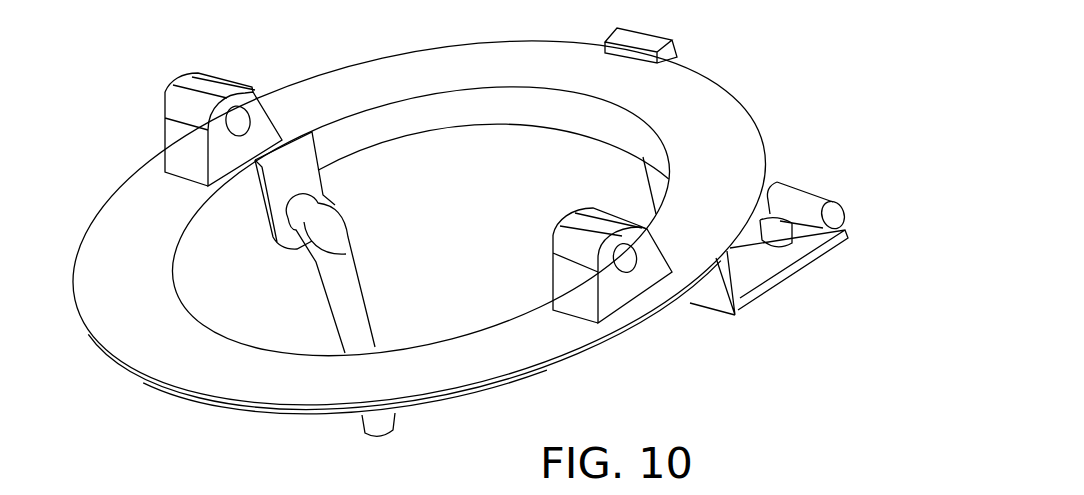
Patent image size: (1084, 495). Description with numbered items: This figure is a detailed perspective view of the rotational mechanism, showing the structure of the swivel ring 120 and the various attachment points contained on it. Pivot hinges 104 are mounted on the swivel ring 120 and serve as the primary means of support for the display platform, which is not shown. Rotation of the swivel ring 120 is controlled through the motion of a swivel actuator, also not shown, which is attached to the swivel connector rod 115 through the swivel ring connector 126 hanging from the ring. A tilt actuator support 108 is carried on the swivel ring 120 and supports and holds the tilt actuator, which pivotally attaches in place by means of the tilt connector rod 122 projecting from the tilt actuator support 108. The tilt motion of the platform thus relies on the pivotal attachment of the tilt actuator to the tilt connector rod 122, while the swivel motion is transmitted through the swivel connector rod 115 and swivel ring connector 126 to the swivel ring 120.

The pivot hinges 104 is at (625, 290).
The tilt actuator support 108 is at (763, 287).
The swivel connector rod 115 is at (353, 283).
The swivel ring 120 is at (720, 132).
The tilt connector rod 122 is at (803, 193).
The swivel ring connector 126 is at (305, 182).